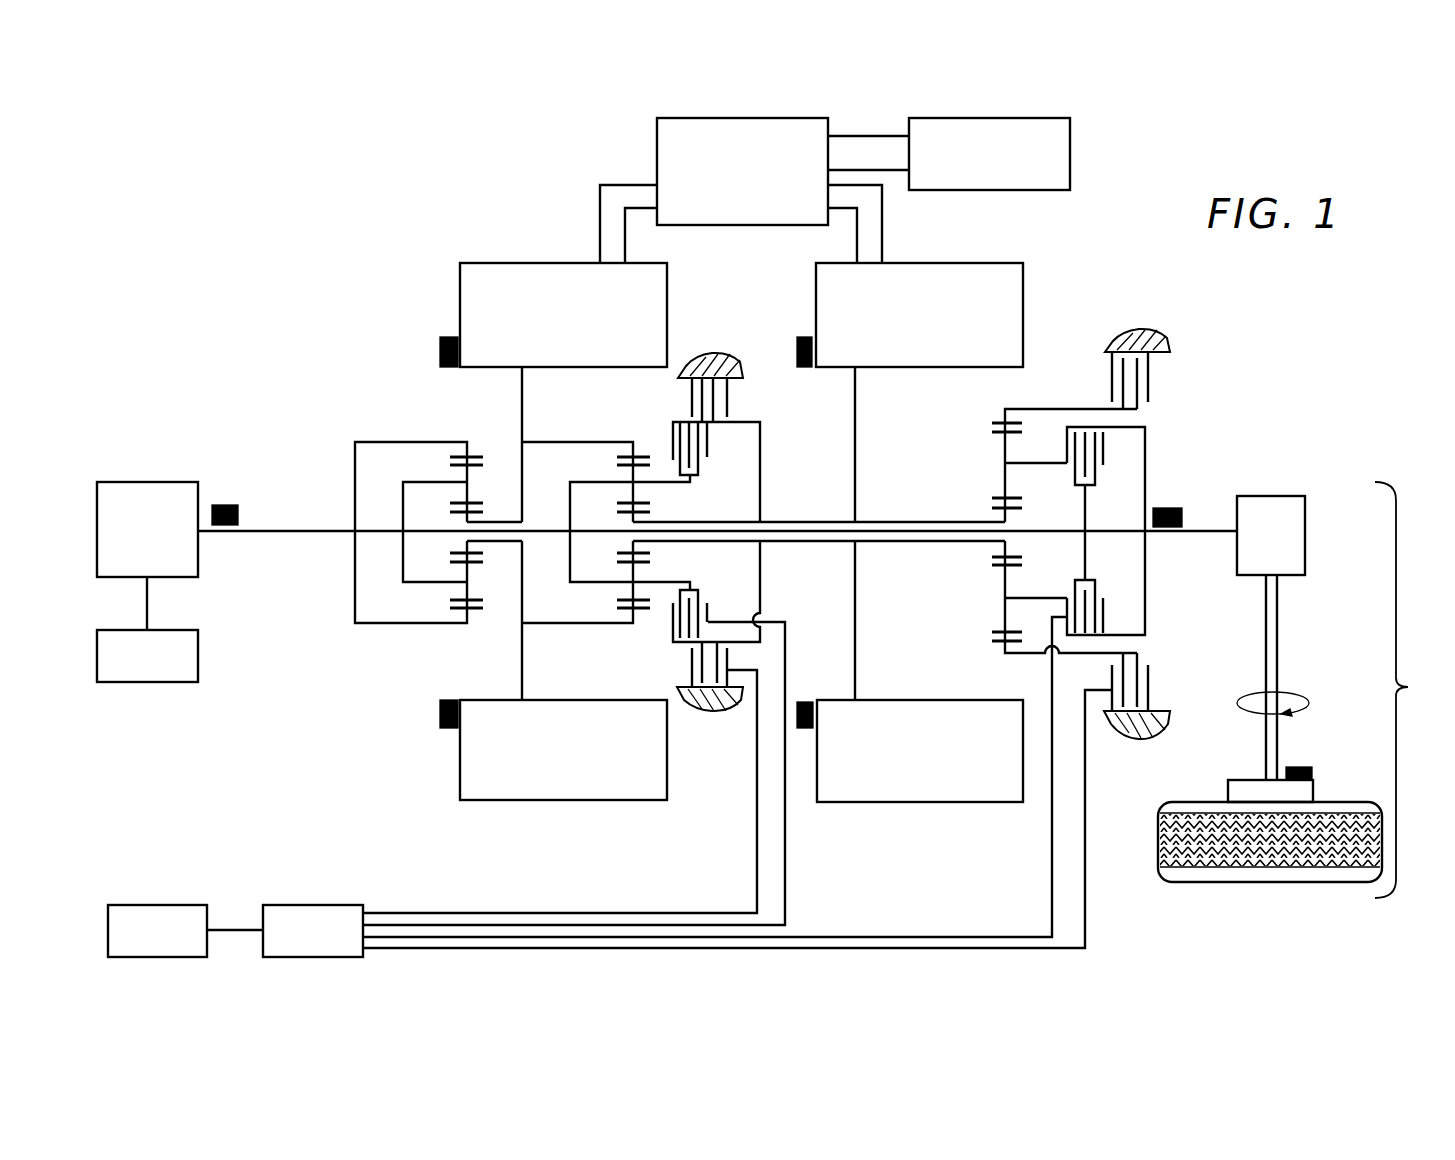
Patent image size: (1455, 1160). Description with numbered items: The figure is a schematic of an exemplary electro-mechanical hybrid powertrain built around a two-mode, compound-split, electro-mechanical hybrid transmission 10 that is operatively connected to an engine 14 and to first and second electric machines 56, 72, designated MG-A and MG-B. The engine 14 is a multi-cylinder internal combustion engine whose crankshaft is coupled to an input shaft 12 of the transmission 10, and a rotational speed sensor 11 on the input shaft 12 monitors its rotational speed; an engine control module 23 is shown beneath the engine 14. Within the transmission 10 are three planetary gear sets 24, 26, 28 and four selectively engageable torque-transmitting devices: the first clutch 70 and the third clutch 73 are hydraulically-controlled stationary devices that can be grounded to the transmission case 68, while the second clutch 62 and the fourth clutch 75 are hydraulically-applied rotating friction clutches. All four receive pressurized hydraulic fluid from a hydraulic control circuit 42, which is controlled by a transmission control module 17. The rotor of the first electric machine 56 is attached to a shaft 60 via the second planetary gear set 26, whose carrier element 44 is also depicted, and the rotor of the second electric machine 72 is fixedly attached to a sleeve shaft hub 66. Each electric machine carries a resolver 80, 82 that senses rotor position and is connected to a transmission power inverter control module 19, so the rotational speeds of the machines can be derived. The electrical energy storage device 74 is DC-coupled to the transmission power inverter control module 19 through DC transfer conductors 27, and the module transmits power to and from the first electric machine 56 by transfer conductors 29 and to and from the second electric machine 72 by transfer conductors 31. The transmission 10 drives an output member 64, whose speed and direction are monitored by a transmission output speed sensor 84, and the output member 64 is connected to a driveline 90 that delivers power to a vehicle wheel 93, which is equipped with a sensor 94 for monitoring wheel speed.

The electro-mechanical hybrid transmission 10 is at (420, 226).
The rotational speed sensor 11 is at (227, 505).
The input shaft 12 is at (315, 528).
The engine 14 is at (153, 482).
The transmission control module 17 is at (148, 905).
The transmission power inverter control module 19 is at (657, 136).
The engine control module 23 is at (198, 672).
The first planetary gear set 24 is at (453, 435).
The second planetary gear set 26 is at (606, 500).
The DC transfer conductors 27 is at (843, 137).
The third planetary gear set 28 is at (1035, 510).
The transfer conductors 29 is at (600, 225).
The transfer conductors 31 is at (882, 217).
The hydraulic control circuit 42 is at (280, 905).
The carrier of second planetary gear set 44 is at (568, 557).
The first electric machine 56 is at (460, 290).
The shaft 60 is at (1057, 528).
The clutch C2 62 is at (1116, 472).
The output member 64 is at (1206, 528).
The sleeve shaft hub 66 is at (877, 520).
The transmission case 68 is at (707, 353).
The clutch C1 70 is at (1101, 372).
The second electric machine 72 is at (1025, 290).
The clutch C3 73 is at (736, 399).
The electrical energy storage device 74 is at (1070, 140).
The clutch C4 75 is at (713, 460).
The resolver 80 is at (440, 350).
The resolver 82 is at (803, 337).
The transmission output speed sensor 84 is at (1168, 508).
The driveline 90 is at (1303, 716).
The vehicle wheel 93 is at (1272, 882).
The wheel speed sensor 94 is at (1302, 767).